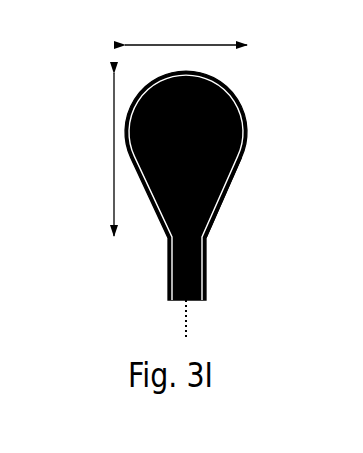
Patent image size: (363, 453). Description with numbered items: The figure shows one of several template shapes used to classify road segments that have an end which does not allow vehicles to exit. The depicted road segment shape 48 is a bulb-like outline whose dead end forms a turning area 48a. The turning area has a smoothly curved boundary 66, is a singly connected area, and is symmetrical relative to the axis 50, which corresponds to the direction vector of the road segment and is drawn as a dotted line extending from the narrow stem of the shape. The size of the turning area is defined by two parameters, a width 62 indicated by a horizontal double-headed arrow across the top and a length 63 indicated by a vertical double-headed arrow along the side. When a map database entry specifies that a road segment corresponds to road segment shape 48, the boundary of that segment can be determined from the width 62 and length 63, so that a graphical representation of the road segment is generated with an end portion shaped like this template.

The road segment shape 48 is at (257, 90).
The turning area 48a is at (224, 194).
The direction vector 50 is at (184, 322).
The width 62 is at (186, 45).
The length 63 is at (114, 148).
The smoothly curved boundary 66 is at (247, 133).